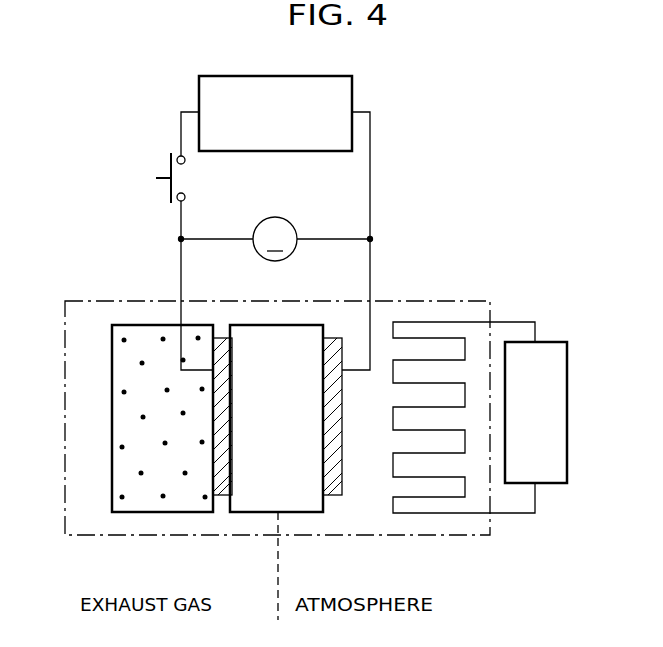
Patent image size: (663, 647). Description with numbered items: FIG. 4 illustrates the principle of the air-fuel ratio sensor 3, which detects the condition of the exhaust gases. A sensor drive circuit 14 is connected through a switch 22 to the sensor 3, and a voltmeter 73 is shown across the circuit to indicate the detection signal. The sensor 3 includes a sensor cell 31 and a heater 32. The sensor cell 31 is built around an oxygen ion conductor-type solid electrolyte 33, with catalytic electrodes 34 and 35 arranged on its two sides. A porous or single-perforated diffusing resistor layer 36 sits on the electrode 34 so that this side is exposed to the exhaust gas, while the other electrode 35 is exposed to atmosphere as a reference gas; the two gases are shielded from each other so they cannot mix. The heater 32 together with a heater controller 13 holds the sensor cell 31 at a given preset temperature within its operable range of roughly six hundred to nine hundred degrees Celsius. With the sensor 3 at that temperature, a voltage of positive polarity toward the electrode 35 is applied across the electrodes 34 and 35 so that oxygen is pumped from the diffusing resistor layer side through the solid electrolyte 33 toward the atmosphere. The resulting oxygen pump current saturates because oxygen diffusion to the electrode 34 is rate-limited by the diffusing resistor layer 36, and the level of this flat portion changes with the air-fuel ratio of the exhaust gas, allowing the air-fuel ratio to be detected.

The sensor drive circuit 14 is at (199, 100).
The switch 22 is at (162, 190).
The voltmeter 73 is at (275, 217).
The air-fuel ratio sensor 3 is at (122, 522).
The sensor cell 31 is at (199, 442).
The diffusing resistor layer 36 is at (128, 462).
The solid electrolyte 33 is at (300, 497).
The electrode 34 is at (225, 497).
The electrode 35 is at (343, 497).
The heater 32 is at (433, 513).
The heater controller 13 is at (572, 350).